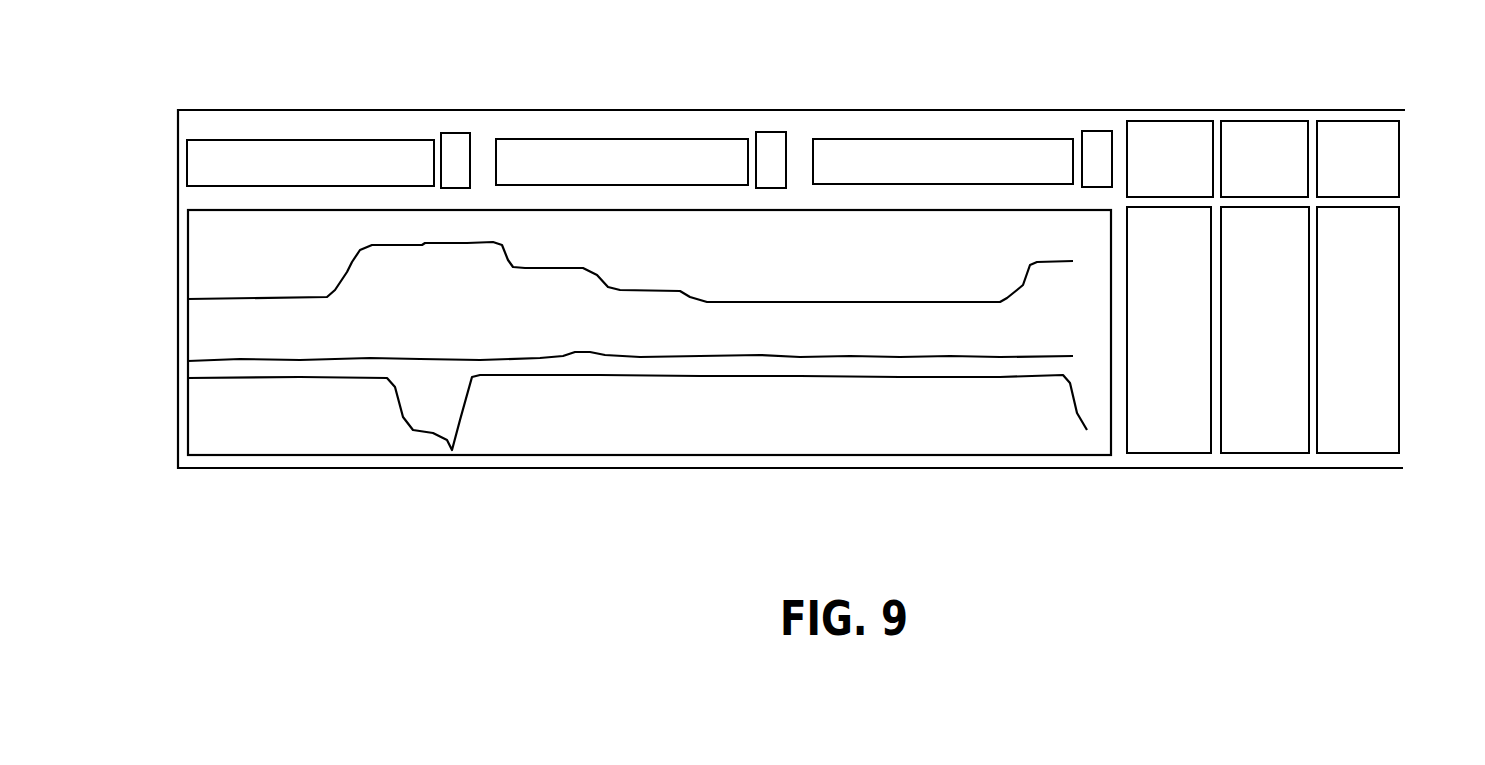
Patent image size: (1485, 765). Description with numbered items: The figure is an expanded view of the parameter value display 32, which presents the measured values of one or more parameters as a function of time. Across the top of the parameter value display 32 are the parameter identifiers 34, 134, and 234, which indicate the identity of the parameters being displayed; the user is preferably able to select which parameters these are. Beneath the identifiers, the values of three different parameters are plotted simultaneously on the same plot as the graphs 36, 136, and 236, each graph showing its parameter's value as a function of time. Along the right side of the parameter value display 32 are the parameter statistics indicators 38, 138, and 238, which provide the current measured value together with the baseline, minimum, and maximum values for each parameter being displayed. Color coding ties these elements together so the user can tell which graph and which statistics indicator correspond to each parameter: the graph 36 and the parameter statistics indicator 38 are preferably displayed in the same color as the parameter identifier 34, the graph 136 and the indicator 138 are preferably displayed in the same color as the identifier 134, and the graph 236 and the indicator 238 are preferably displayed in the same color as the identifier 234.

The parameter value display 32 is at (1377, 101).
The parameter identifier 34 is at (430, 148).
The parameter identifier 134 is at (732, 158).
The parameter identifier 234 is at (1060, 153).
The graph 36 is at (893, 299).
The graph 136 is at (574, 375).
The graph 236 is at (752, 352).
The parameter statistics indicator 38 is at (1128, 445).
The parameter statistics indicator 138 is at (1226, 445).
The parameter statistics indicator 238 is at (1322, 445).